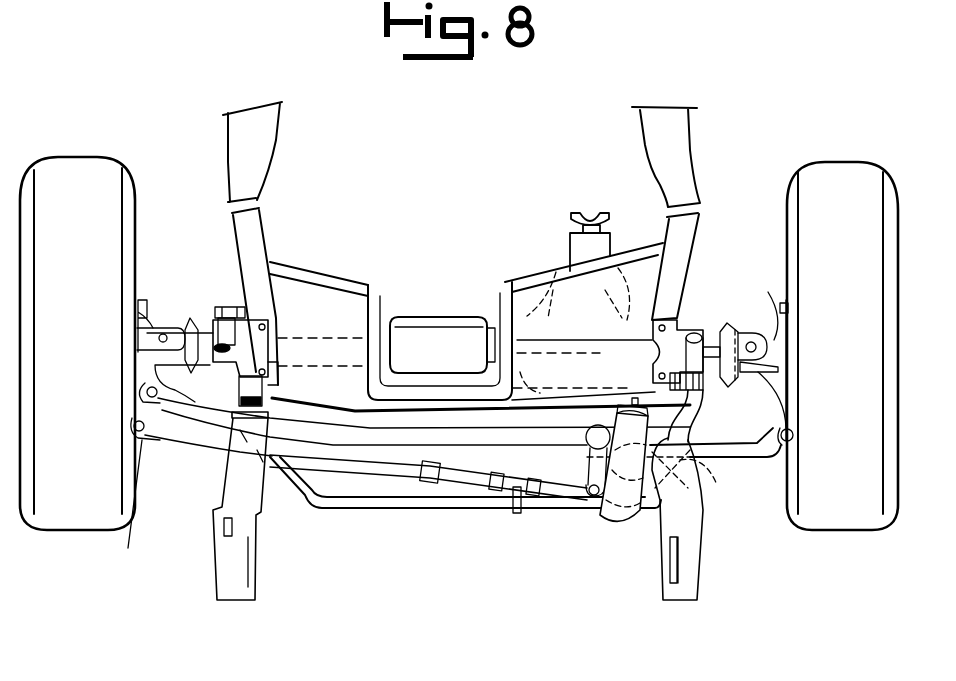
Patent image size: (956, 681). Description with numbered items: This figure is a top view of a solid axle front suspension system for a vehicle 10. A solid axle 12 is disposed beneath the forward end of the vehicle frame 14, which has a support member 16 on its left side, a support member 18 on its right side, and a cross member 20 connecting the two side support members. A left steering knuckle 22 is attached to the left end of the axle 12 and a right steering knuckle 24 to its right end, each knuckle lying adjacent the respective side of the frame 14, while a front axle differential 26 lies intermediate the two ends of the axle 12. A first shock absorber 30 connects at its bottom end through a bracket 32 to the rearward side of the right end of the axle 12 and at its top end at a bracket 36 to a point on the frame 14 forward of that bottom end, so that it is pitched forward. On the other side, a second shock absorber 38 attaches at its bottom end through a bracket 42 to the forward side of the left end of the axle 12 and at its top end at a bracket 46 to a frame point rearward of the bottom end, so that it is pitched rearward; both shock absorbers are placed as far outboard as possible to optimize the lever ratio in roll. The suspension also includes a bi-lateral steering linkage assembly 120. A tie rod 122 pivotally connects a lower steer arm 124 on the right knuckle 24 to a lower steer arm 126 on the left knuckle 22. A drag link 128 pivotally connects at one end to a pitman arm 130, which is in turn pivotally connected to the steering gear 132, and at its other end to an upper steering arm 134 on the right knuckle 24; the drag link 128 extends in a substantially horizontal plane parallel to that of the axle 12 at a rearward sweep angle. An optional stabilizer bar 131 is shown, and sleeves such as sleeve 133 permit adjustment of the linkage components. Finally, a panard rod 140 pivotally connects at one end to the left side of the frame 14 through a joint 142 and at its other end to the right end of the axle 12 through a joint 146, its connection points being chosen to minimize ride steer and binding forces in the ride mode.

The vehicle 10 is at (415, 182).
The solid axle 12 is at (440, 318).
The vehicle frame 14 is at (210, 154).
The support member 16 is at (693, 244).
The support member 18 is at (237, 233).
The cross member 20 is at (306, 270).
The left steering knuckle 22 is at (770, 292).
The right steering knuckle 24 is at (143, 319).
The front axle differential 26 is at (568, 256).
The first shock absorber 30 is at (227, 305).
The bracket 32 is at (218, 306).
The bracket 36 is at (270, 350).
The second shock absorber 38 is at (694, 418).
The bracket 42 is at (707, 392).
The bracket 46 is at (680, 333).
The bi-lateral steering linkage assembly 120 is at (430, 518).
The tie rod 122 is at (178, 455).
The lower steer arm 124 is at (134, 511).
The lower steer arm 126 is at (778, 460).
The drag link 128 is at (403, 476).
The pitman arm 130 is at (588, 470).
The stabilizer bar 131 is at (323, 510).
The steering gear 132 is at (618, 530).
The sleeve 133 is at (513, 490).
The upper steering arm 134 is at (167, 373).
The panard rod 140 is at (533, 433).
The joint 142 is at (717, 482).
The joint 146 is at (263, 380).